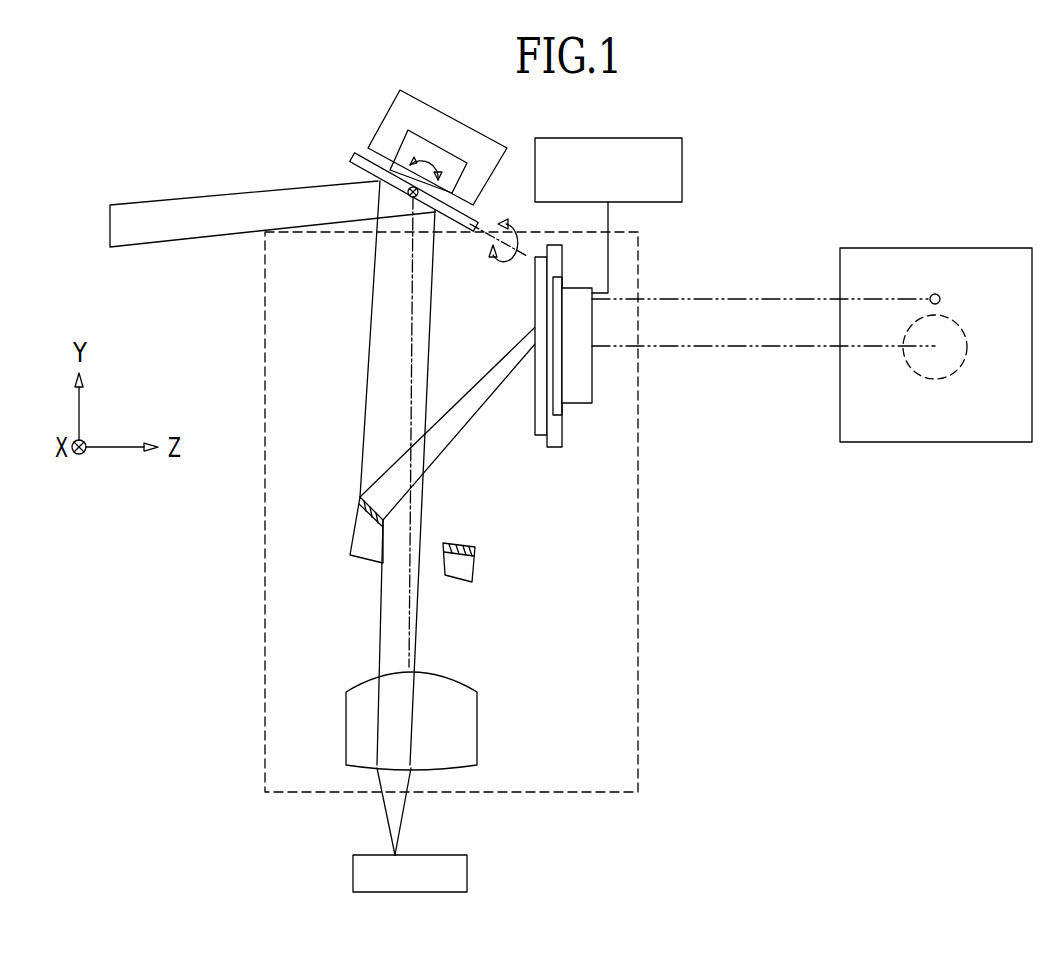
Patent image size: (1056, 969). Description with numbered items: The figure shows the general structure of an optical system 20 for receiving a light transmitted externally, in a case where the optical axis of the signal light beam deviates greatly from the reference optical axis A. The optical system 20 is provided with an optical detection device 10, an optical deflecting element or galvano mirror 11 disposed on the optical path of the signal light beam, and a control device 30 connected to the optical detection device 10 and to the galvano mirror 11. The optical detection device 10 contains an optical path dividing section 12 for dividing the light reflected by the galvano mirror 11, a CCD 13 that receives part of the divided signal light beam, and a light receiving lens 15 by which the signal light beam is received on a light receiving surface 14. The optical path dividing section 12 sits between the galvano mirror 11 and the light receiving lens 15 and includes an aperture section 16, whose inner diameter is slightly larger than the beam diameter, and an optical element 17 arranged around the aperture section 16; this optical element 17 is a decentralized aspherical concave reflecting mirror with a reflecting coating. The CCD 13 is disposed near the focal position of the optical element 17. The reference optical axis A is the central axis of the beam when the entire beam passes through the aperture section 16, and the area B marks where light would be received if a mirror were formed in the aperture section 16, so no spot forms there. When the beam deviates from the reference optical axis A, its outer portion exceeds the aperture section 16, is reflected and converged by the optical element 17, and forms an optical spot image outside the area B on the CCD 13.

The optical detection device 10 is at (640, 597).
The optical deflecting element (galvano mirror) 11 is at (395, 127).
The optical path dividing section 12 is at (338, 530).
The CCD (light receiving element) 13 is at (561, 431).
The light receiving surface 14 is at (460, 855).
The light receiving lens 15 is at (477, 727).
The aperture section 16 is at (443, 551).
The optical element 17 is at (465, 545).
The optical system 20 is at (724, 109).
The control device (control section) 30 is at (682, 170).
The reference optical axis A is at (410, 398).
The area B is at (936, 380).